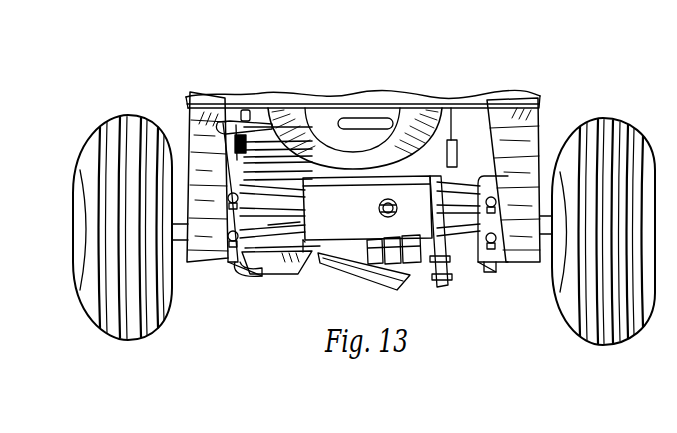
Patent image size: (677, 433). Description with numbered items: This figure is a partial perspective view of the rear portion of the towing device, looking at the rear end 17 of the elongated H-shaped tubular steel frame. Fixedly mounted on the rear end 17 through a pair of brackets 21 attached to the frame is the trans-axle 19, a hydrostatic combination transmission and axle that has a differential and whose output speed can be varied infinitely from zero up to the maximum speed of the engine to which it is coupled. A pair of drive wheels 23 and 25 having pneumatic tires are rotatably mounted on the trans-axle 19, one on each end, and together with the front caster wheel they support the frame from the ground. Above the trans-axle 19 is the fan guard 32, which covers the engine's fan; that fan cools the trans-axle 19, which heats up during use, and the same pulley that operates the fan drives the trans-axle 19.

The rear end 17 is at (480, 325).
The trans-axle 19 is at (356, 218).
The brackets 21 is at (240, 264).
The drive wheel 23 is at (560, 298).
The drive wheel 25 is at (165, 288).
The fan guard 32 is at (389, 117).